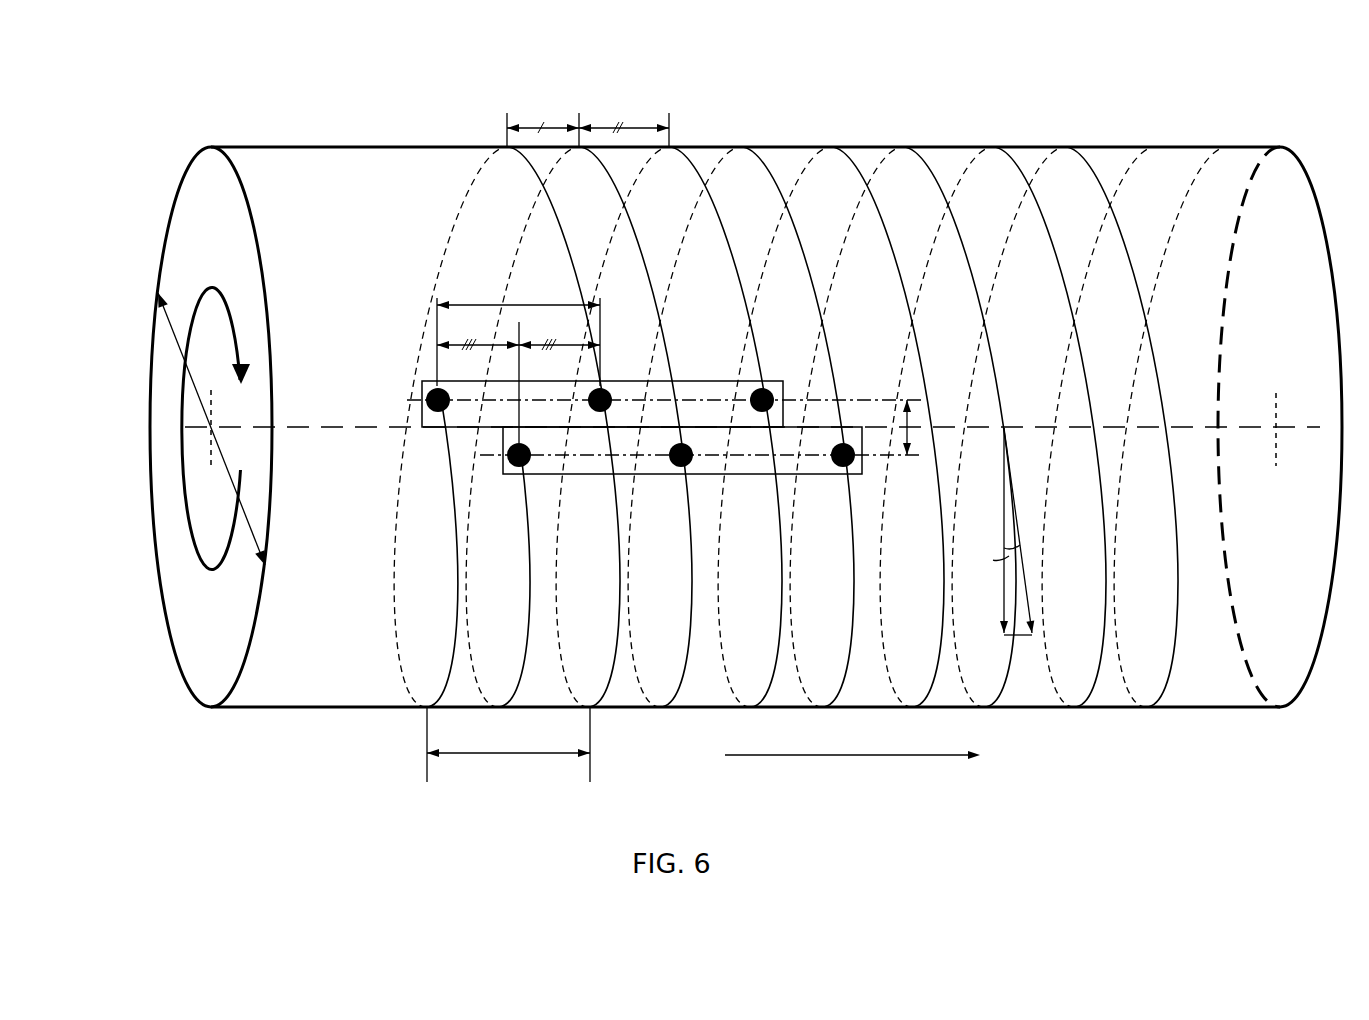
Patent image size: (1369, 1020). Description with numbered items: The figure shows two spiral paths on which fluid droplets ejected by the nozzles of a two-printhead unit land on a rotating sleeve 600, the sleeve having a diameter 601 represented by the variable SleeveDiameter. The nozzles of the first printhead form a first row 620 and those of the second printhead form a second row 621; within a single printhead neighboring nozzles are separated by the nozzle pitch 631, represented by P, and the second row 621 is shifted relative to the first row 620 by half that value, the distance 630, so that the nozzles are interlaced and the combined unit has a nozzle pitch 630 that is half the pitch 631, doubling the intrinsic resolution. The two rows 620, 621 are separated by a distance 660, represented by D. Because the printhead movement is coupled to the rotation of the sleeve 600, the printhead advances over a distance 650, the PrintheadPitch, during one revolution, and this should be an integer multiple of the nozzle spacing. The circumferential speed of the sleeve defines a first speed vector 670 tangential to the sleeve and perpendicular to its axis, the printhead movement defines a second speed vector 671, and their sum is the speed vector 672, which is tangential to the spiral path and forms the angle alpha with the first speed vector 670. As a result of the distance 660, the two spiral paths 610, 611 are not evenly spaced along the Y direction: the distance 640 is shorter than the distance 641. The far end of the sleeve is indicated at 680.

The rotating sleeve 600 is at (332, 240).
The diameter 601 is at (252, 542).
The first spiral path 610 is at (400, 472).
The second spiral path 611 is at (468, 518).
The first row of nozzles 620 is at (850, 397).
The second row of nozzles 621 is at (878, 458).
The nozzle pitch of the multiple printhead unit 630 is at (480, 345).
The nozzle pitch 631 is at (535, 303).
The distance between spiral paths 640 is at (557, 125).
The distance between spiral paths 641 is at (637, 125).
The printhead pitch 650 is at (483, 755).
The distance between nozzle rows 660 is at (910, 418).
The first speed vector 670 is at (1002, 587).
The second speed vector 671 is at (1020, 640).
The resultant speed vector 672 is at (1030, 580).
The far end 680 is at (1182, 427).